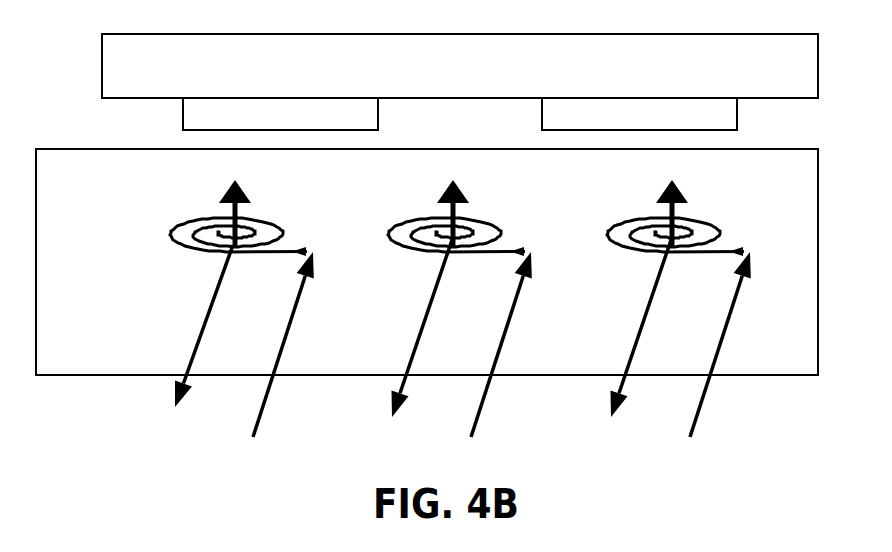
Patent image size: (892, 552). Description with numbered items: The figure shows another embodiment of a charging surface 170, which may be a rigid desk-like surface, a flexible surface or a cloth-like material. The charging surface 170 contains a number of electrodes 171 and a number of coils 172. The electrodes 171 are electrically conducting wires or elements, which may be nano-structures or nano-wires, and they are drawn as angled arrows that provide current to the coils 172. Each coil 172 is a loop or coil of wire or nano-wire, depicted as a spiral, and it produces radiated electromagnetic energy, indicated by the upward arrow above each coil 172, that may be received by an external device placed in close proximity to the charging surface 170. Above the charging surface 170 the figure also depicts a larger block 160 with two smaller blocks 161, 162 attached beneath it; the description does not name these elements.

The light source 160 is at (460, 66).
The first emitter 161 is at (280, 114).
The second emitter 162 is at (639, 114).
The charging surface 170 is at (428, 303).
The electrodes 171 is at (487, 338).
The coils 172 is at (477, 212).